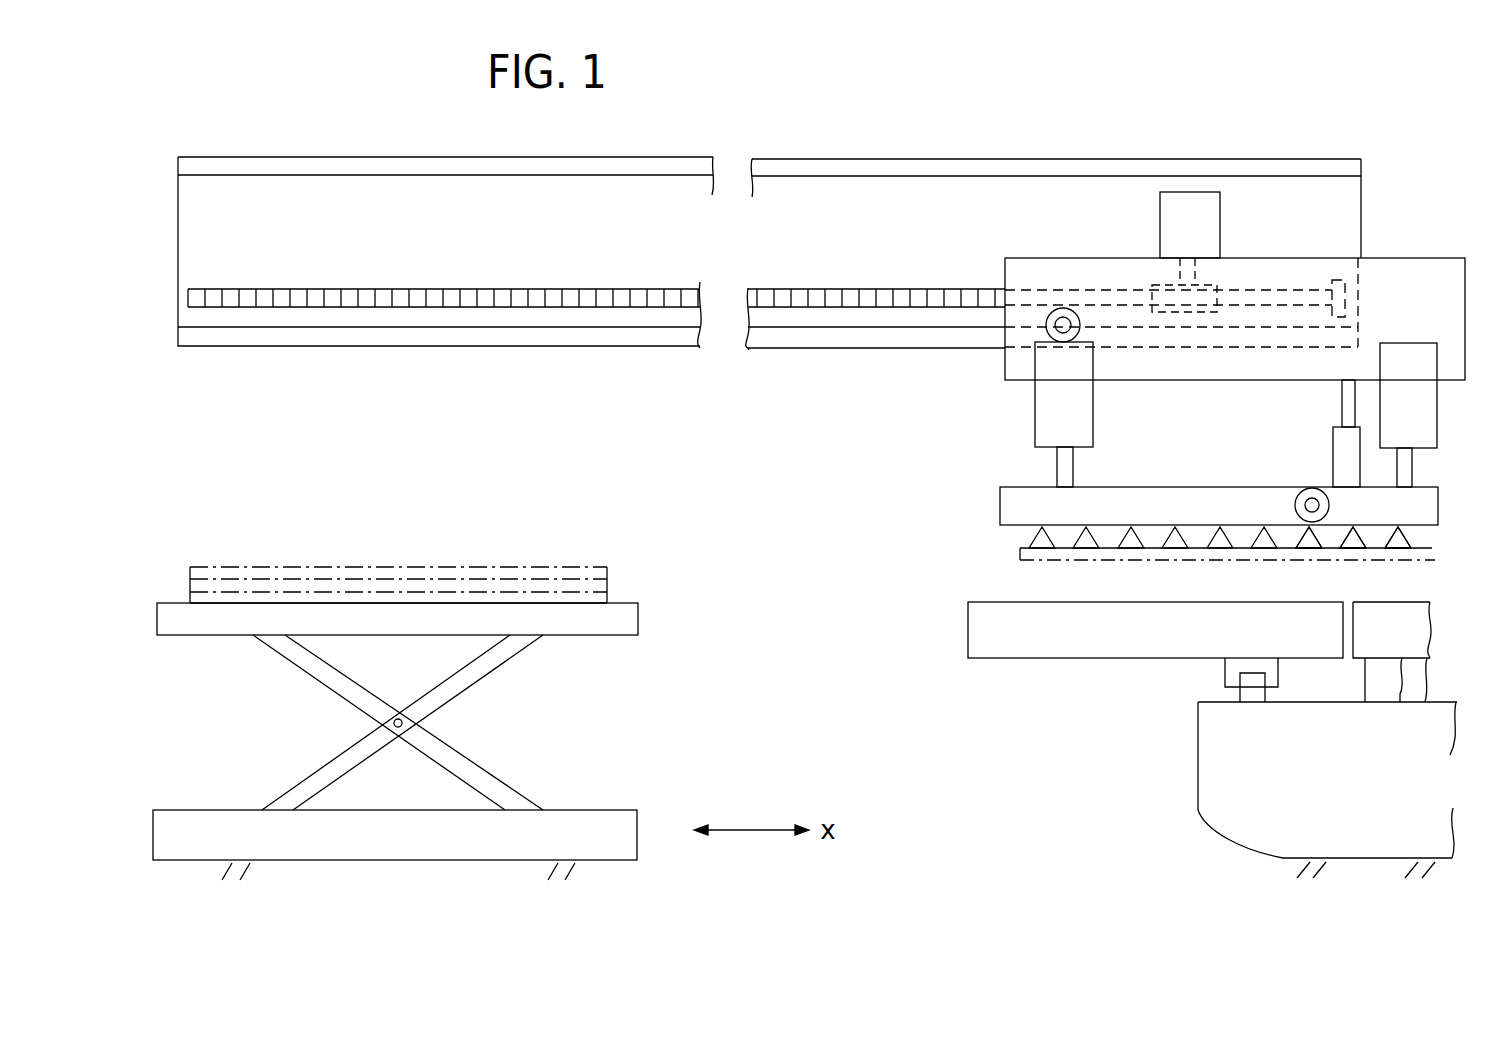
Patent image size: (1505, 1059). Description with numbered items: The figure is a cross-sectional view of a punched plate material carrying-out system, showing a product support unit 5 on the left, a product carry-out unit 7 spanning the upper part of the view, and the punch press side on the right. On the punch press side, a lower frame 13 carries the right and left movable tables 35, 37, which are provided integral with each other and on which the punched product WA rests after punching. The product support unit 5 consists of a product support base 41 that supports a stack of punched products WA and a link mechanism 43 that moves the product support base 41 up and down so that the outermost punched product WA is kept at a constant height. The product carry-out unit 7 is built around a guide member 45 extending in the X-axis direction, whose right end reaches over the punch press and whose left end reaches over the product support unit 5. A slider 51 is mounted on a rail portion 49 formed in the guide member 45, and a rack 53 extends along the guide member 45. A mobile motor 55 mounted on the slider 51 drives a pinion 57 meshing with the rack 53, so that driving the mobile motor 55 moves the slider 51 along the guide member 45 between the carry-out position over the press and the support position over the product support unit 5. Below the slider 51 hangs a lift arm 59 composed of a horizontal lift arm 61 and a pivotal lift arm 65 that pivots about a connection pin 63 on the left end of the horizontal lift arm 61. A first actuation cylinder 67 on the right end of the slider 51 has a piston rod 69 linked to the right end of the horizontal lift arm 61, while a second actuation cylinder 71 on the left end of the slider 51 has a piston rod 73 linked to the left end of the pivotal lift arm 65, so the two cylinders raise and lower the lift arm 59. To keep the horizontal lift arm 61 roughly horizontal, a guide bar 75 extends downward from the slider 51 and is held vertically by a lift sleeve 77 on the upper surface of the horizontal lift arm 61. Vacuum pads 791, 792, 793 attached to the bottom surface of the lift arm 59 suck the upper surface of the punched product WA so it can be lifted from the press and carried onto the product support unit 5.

The product support unit 5 is at (515, 514).
The product carry-out unit 7 is at (1068, 146).
The lower frame 13 is at (1198, 790).
The movable table 35 is at (1037, 660).
The movable table 37 is at (1402, 702).
The product support base 41 is at (640, 620).
The link mechanism 43 is at (497, 775).
The guide member 45 is at (797, 156).
The rail portion 49 is at (792, 349).
The slider 51 is at (1390, 258).
The rack 53 is at (800, 290).
The mobile motor 55 is at (1220, 238).
The pinion 57 is at (1160, 288).
The lift arm 59 is at (1179, 482).
The horizontal lift arm 61 is at (1428, 487).
The connection pin 63 is at (1300, 489).
The pivotal lift arm 65 is at (1132, 487).
The first actuation cylinder 67 is at (1395, 343).
The piston rod 69 is at (1413, 462).
The second actuation cylinder 71 is at (1030, 403).
The piston rod 73 is at (1055, 463).
The guide bar 75 is at (1343, 410).
The lift sleeve 77 is at (1333, 455).
The vacuum pad 791 is at (1398, 549).
The vacuum pad 792 is at (1352, 556).
The vacuum pad 793 is at (1307, 549).
The punched product WA is at (1020, 560).